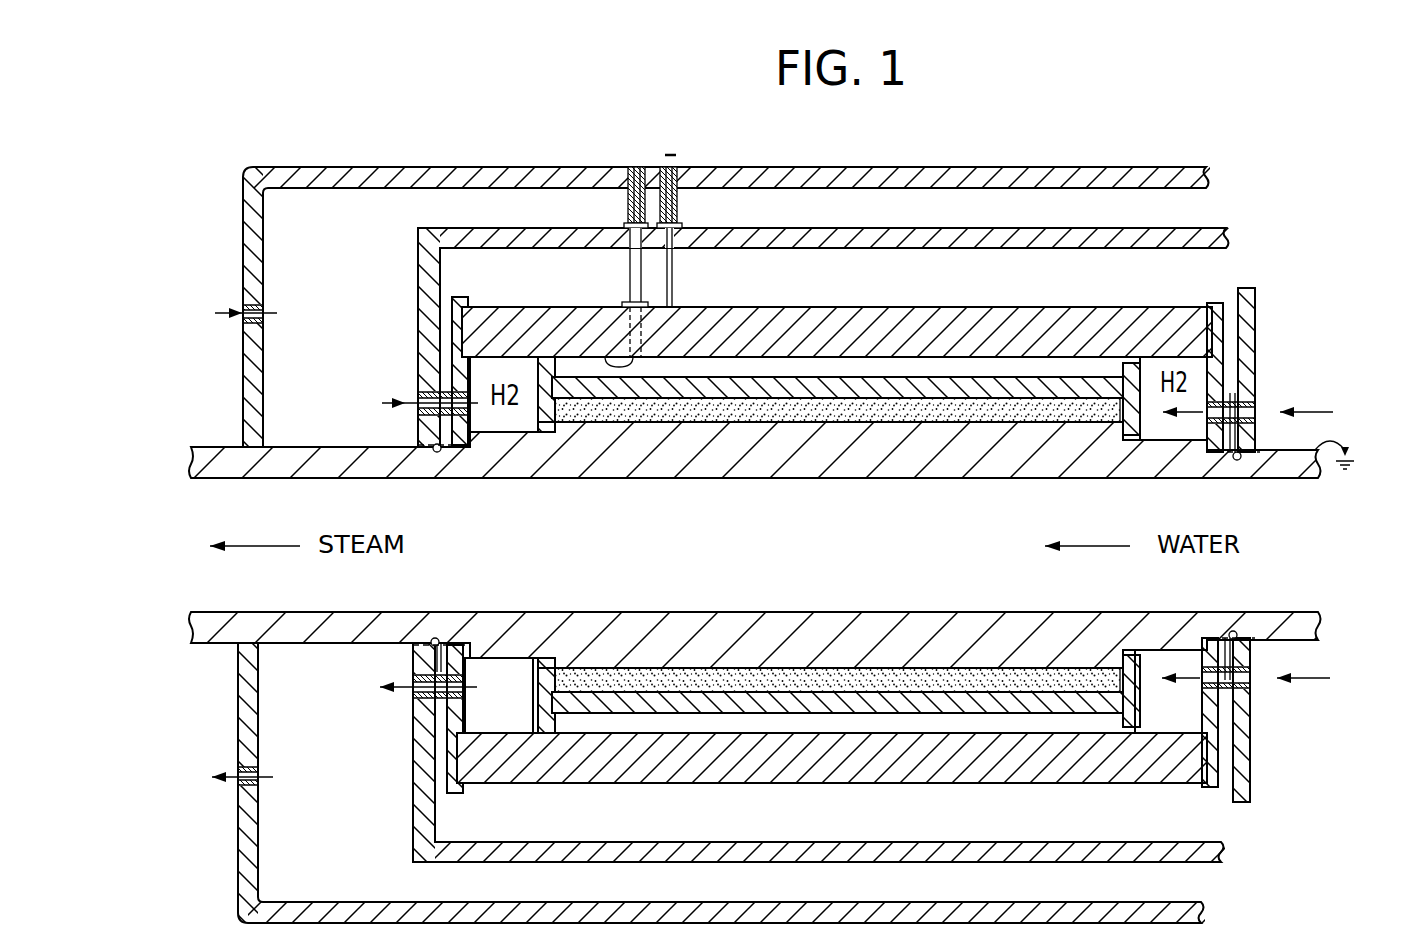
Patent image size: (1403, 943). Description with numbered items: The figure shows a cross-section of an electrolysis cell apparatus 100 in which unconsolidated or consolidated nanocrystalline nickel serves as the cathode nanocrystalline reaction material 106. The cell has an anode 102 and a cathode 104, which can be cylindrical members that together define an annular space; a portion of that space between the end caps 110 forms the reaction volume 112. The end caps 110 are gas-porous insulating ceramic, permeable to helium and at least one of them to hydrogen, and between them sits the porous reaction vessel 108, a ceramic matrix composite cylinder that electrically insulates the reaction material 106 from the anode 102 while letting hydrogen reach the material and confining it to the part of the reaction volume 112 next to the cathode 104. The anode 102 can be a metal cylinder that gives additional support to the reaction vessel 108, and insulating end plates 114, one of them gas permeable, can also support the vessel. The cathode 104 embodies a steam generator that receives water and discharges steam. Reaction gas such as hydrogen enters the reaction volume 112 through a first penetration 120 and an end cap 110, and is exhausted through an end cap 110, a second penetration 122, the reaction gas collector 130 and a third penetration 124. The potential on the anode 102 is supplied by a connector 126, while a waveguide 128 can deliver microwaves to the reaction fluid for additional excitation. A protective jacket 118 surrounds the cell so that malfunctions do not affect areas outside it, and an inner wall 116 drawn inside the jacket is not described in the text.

The electrolysis cell apparatus 100 is at (1288, 776).
The anode 102 is at (1040, 325).
The cathode 104 is at (1308, 478).
The cathode nanocrystalline reaction material 106 is at (712, 398).
The porous reaction vessel 108 is at (597, 380).
The end caps 110 is at (1137, 365).
The reaction volume 112 is at (905, 377).
The insulating end plates 114 is at (1243, 285).
The inner housing wall 116 is at (1230, 240).
The protective jacket 118 is at (1212, 173).
The first penetration 120 is at (1257, 406).
The second penetration 122 is at (392, 402).
The third penetration 124 is at (216, 314).
The connector 126 is at (673, 145).
The waveguide 128 is at (628, 142).
The reaction gas collector 130 is at (340, 280).